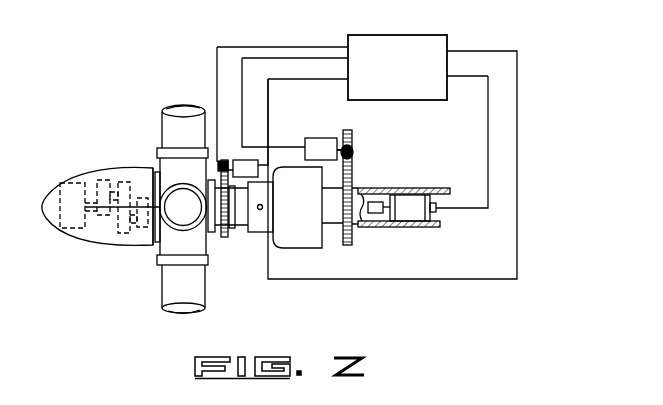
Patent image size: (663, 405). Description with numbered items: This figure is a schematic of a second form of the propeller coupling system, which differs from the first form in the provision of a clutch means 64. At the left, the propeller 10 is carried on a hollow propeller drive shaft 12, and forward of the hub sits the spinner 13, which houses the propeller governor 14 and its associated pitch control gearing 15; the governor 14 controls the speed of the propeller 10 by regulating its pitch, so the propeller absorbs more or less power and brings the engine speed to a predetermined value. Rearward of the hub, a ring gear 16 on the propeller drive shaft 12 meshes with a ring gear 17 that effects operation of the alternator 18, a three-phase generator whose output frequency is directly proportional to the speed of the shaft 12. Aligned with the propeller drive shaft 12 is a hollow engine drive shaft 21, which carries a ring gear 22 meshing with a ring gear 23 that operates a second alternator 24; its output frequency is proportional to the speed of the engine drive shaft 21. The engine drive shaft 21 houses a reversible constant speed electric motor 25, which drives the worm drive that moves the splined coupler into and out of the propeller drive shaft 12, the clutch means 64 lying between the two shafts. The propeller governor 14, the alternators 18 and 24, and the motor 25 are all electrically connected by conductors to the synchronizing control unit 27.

The propeller 10 is at (160, 283).
The propeller drive shaft 12 is at (239, 228).
The spinner 13 is at (74, 180).
The propeller governor 14 is at (71, 234).
The pitch control gearing 15 is at (118, 182).
The ring gear 16 is at (226, 240).
The ring gear 17 is at (221, 161).
The alternator 18 is at (248, 128).
The engine drive shaft 21 is at (333, 226).
The ring gear 22 is at (353, 180).
The ring gear 23 is at (354, 148).
The alternator 24 is at (289, 109).
The constant speed electric motor 25 is at (412, 190).
The synchronizing control unit 27 is at (367, 157).
The clutch means 64 is at (285, 207).